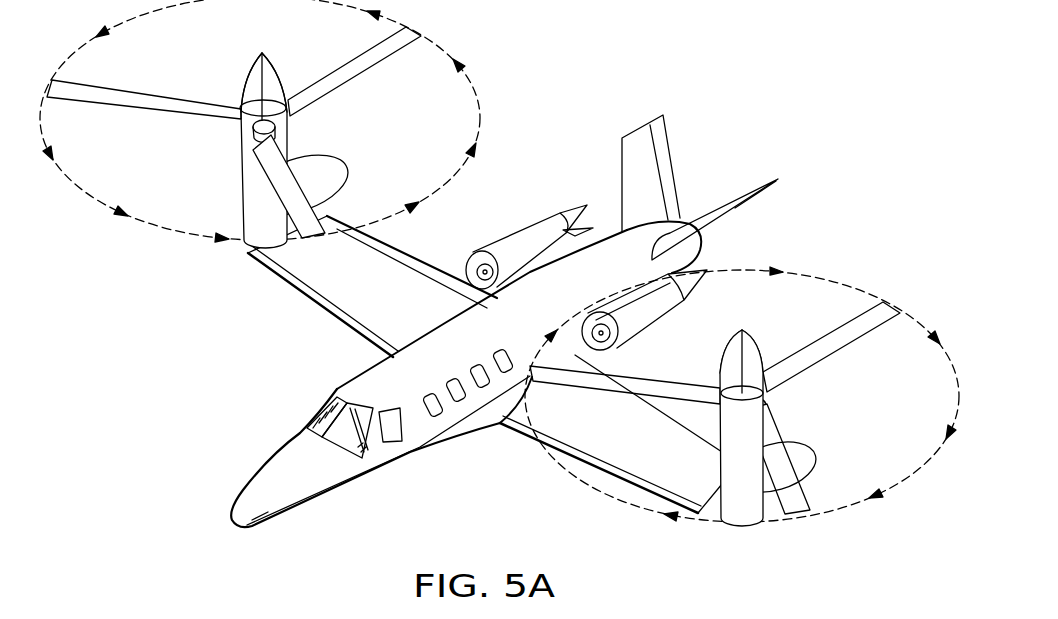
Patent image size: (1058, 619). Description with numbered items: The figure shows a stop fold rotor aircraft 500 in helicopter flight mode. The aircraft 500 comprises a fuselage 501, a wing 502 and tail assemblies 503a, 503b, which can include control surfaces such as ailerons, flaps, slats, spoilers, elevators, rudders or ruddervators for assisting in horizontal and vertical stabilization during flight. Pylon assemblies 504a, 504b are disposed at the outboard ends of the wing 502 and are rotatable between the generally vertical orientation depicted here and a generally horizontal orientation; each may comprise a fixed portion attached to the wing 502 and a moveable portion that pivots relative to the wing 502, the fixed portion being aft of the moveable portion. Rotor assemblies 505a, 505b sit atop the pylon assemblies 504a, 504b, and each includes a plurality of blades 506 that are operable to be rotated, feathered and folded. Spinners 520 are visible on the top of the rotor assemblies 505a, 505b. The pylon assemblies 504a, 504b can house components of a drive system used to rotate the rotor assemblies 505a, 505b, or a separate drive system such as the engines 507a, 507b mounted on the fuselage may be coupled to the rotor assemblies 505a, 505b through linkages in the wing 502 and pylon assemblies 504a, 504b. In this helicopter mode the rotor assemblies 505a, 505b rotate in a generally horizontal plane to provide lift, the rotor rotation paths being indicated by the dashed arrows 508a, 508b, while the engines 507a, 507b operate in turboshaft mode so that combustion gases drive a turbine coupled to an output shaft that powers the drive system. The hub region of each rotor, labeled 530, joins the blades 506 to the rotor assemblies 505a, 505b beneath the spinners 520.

The aircraft 500 is at (724, 155).
The fuselage 501 is at (320, 490).
The wing 502 is at (352, 308).
The tail assembly 503a is at (737, 203).
The tail assembly 503b is at (623, 152).
The pylon assembly 504a is at (742, 522).
The pylon assembly 504b is at (239, 182).
The rotor assembly 505a is at (783, 402).
The rotor assembly 505b is at (215, 86).
The blade 506 is at (378, 67).
The engine 507a is at (690, 288).
The engine 507b is at (533, 230).
The rotor disc rotation path 508a is at (823, 279).
The rotor disc rotation path 508b is at (481, 107).
The spinner 520 is at (291, 76).
The hub collar 530 is at (240, 138).